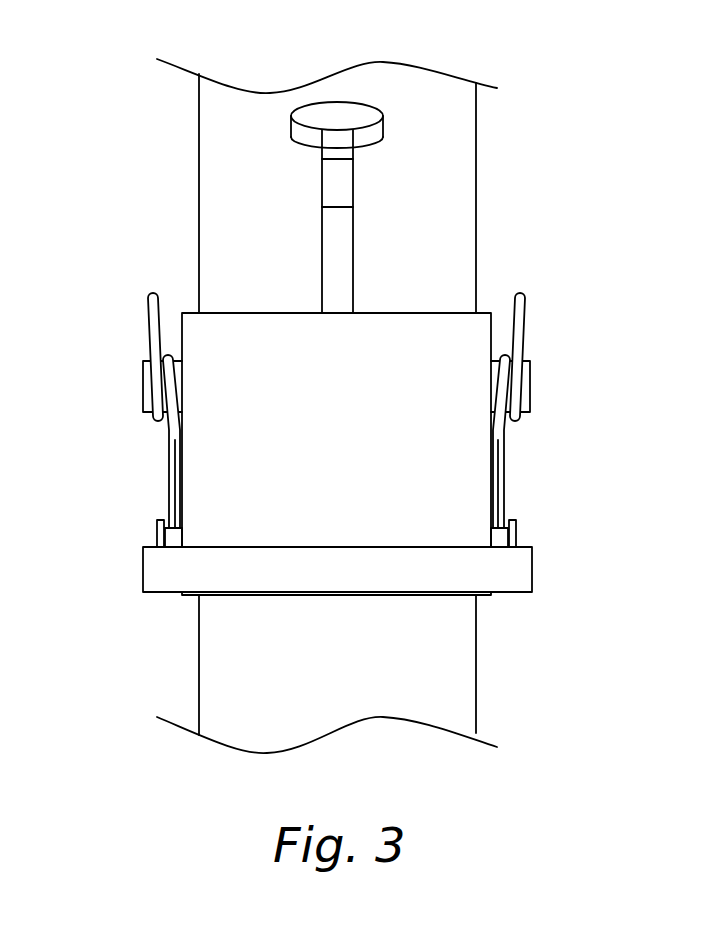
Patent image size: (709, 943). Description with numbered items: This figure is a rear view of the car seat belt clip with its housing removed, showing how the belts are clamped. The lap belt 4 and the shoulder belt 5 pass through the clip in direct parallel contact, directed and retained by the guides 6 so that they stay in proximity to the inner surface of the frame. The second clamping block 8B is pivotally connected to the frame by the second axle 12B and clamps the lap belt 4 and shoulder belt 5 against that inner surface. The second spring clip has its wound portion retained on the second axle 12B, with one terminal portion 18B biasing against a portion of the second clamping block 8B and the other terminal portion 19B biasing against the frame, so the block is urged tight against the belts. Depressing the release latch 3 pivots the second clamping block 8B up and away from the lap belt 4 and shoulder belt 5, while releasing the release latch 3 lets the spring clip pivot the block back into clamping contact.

The release latch 3 is at (360, 102).
The lap belt 4 is at (207, 680).
The shoulder belt 5 is at (213, 133).
The guides 6 is at (143, 568).
The second clamping block 8B is at (448, 342).
The second axle 12B is at (532, 387).
The first terminal portion of second spring clip 18B is at (167, 483).
The second terminal portion of second spring clip 19B is at (147, 330).